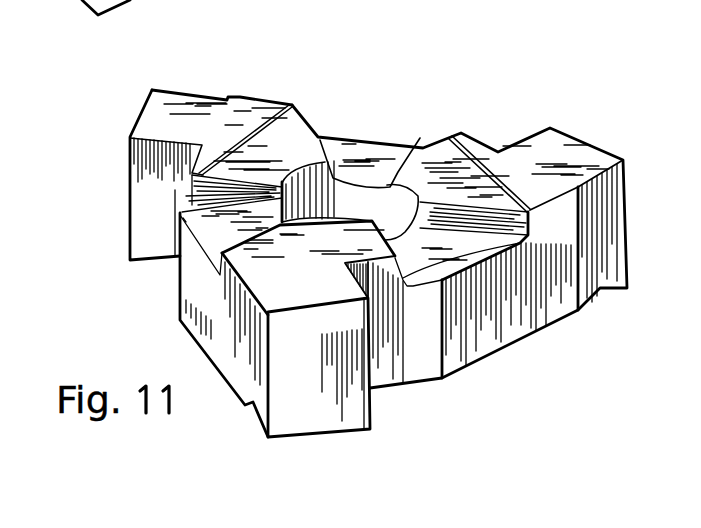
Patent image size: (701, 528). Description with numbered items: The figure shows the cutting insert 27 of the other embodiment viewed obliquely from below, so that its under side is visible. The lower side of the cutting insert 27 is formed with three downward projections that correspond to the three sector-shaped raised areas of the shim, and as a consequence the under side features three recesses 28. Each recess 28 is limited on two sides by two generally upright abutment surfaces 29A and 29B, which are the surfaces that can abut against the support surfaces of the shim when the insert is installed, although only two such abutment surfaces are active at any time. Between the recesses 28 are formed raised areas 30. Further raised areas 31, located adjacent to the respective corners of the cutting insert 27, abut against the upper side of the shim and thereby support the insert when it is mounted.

The cutting insert 27 is at (422, 133).
The recess 28 is at (358, 152).
The abutment surface 29A is at (195, 190).
The abutment surface 29B is at (250, 245).
The raised area 30 is at (285, 140).
The raised area 31 is at (550, 157).